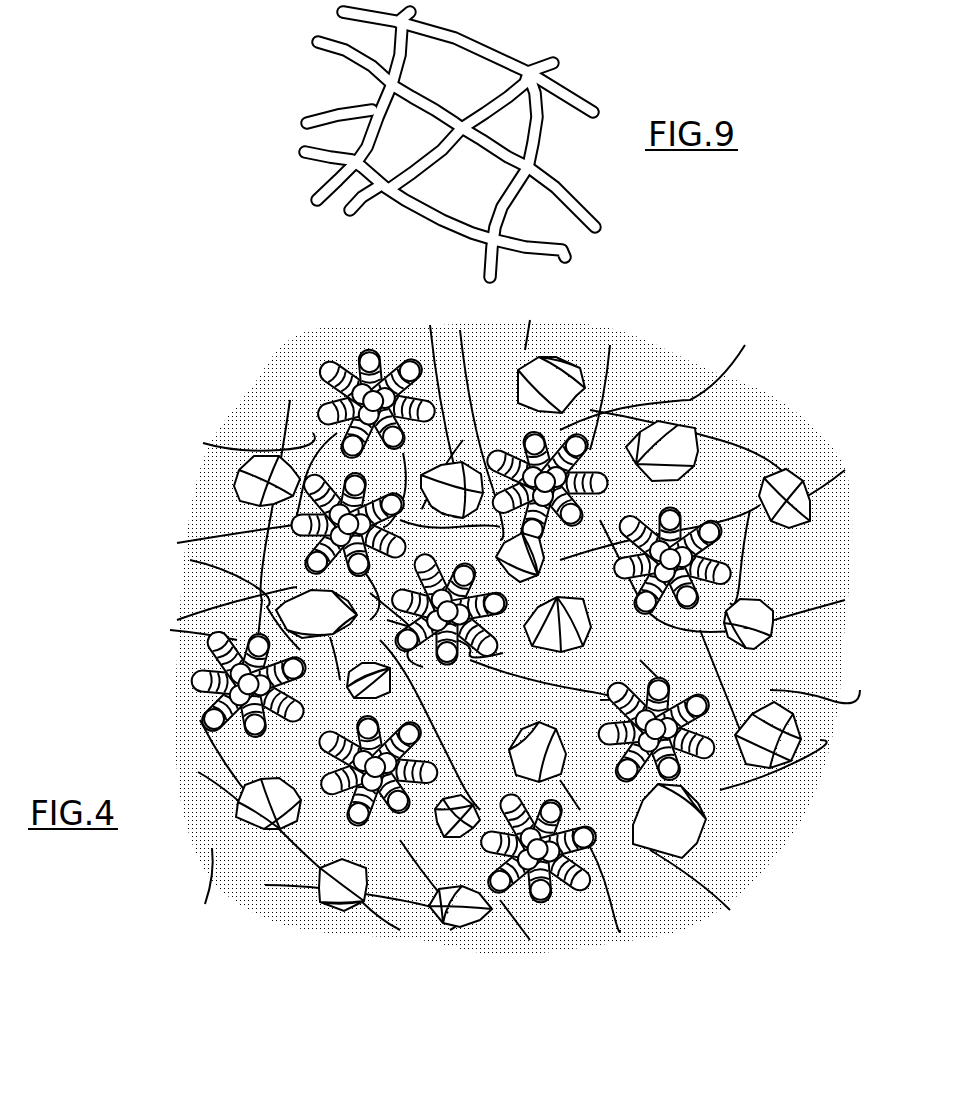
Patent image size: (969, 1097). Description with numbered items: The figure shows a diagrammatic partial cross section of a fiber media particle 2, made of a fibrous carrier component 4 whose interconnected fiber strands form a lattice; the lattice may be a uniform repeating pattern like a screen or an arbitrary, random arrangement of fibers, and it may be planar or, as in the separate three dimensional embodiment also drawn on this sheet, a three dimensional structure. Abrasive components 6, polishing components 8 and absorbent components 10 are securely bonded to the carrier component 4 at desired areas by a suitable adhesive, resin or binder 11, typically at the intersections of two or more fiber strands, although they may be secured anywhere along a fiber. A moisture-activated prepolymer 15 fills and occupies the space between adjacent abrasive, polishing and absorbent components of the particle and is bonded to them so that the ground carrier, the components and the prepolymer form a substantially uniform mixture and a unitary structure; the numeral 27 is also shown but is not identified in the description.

The fiber media 2 is at (849, 568).
The carrier component 4 is at (737, 540).
The abrasive component 6 is at (340, 368).
The polishing component 8 is at (783, 610).
The absorbent component 10 is at (775, 702).
The adhesive, resin or binder 11 is at (265, 885).
The prepolymer 15 is at (198, 772).
The fiber 27 is at (190, 560).